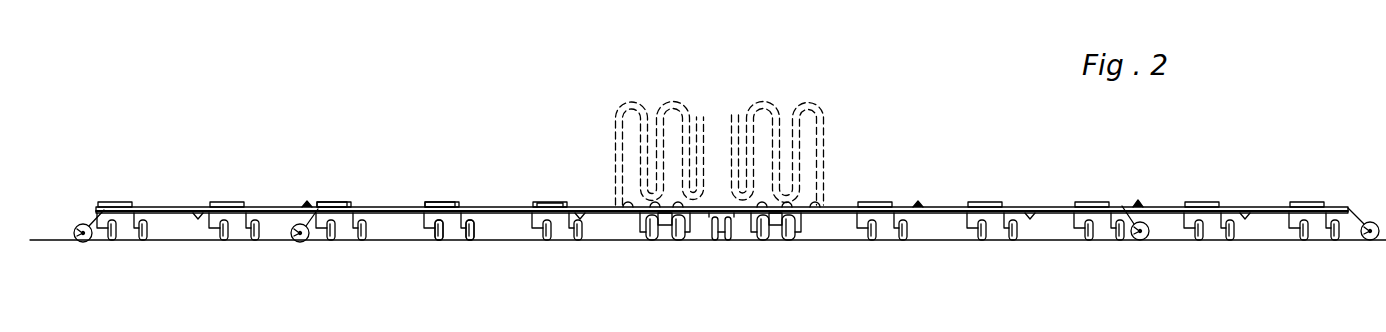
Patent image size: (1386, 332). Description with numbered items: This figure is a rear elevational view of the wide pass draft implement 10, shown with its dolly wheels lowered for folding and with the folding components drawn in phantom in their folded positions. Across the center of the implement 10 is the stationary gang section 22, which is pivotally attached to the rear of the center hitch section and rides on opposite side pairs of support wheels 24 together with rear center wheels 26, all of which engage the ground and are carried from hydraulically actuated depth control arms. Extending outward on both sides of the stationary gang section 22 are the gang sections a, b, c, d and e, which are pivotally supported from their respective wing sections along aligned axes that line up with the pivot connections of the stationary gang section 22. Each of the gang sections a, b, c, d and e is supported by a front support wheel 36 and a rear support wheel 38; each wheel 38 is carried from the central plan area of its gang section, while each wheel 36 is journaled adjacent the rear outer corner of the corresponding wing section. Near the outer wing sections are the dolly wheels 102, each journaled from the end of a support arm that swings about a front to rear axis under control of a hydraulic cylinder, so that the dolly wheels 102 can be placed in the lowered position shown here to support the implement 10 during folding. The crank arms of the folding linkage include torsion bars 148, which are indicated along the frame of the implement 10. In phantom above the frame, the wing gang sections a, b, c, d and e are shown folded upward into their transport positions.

The wide pass draft implement 10 is at (838, 167).
The stationary gang section 22 is at (745, 211).
The support wheels 24 is at (789, 241).
The rear center wheels 26 is at (727, 245).
The front support wheel 36 is at (432, 238).
The rear support wheel 38 is at (470, 230).
The dolly wheel 102 is at (83, 242).
The torsion bars 148 is at (317, 206).
The gang section a is at (582, 207).
The gang section b is at (488, 206).
The gang section c is at (382, 206).
The gang section d is at (263, 206).
The gang section e is at (157, 207).